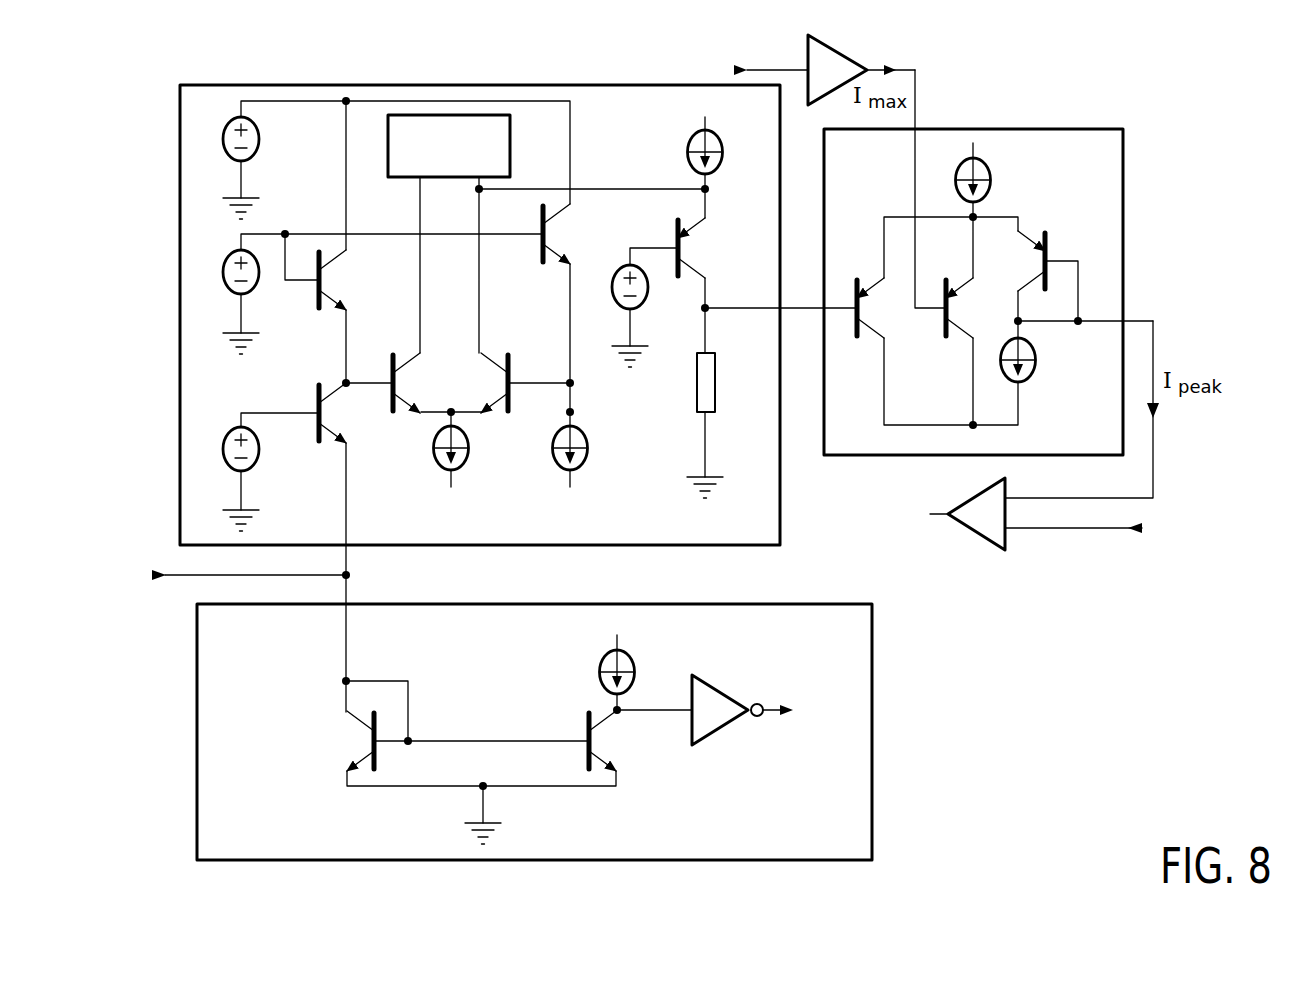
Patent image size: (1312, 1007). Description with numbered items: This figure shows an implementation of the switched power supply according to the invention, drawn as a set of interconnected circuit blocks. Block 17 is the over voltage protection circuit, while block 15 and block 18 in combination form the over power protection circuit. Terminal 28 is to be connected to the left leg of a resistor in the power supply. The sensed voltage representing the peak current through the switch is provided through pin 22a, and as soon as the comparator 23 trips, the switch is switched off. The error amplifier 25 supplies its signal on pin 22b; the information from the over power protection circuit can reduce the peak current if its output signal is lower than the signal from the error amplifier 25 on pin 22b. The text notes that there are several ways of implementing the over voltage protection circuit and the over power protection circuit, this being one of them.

The block 15 is at (612, 85).
The block 17 is at (872, 673).
The block 18 is at (1123, 157).
The pin 22a is at (1142, 530).
The pin 22b is at (736, 70).
The comparator 23 is at (975, 536).
The error amplifier 25 is at (850, 58).
The terminal 28 is at (160, 578).